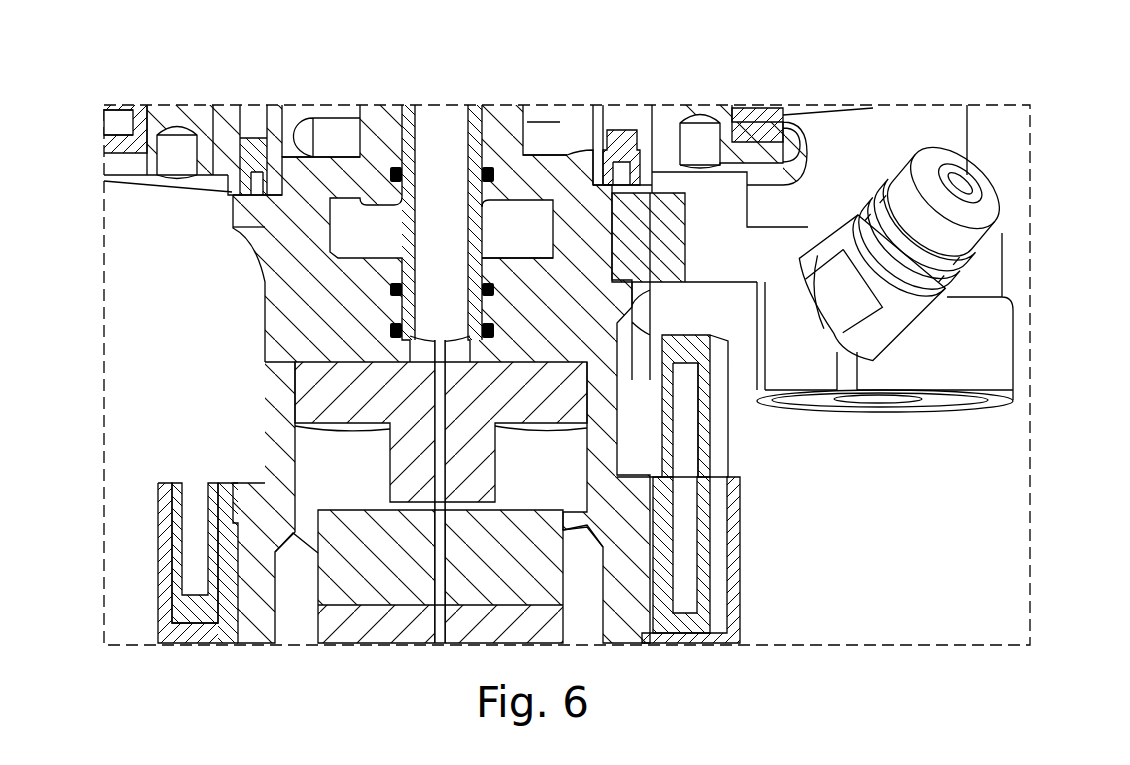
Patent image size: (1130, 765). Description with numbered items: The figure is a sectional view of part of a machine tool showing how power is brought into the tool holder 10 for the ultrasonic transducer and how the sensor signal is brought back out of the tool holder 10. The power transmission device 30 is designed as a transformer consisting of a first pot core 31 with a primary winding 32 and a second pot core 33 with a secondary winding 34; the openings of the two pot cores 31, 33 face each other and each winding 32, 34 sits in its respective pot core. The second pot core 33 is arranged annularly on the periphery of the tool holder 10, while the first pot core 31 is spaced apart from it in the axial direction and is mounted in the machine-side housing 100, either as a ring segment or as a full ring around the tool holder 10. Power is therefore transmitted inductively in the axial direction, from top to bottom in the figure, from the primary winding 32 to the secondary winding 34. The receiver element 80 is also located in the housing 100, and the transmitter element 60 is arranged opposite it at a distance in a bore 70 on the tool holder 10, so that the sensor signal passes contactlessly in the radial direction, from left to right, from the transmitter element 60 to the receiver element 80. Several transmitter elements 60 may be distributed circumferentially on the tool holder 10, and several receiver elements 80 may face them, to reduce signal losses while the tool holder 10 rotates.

The tool holder 10 is at (256, 347).
The power transmission device 30 is at (736, 430).
The first pot core 31 is at (707, 413).
The primary winding 32 is at (690, 447).
The second pot core 33 is at (176, 530).
The secondary winding 34 is at (200, 565).
The transmitter element 60 is at (562, 186).
The bore 70 is at (622, 194).
The receiver element 80 is at (688, 235).
The machine-side housing 100 is at (1014, 353).